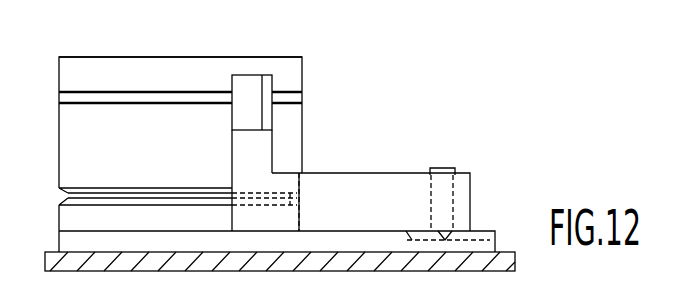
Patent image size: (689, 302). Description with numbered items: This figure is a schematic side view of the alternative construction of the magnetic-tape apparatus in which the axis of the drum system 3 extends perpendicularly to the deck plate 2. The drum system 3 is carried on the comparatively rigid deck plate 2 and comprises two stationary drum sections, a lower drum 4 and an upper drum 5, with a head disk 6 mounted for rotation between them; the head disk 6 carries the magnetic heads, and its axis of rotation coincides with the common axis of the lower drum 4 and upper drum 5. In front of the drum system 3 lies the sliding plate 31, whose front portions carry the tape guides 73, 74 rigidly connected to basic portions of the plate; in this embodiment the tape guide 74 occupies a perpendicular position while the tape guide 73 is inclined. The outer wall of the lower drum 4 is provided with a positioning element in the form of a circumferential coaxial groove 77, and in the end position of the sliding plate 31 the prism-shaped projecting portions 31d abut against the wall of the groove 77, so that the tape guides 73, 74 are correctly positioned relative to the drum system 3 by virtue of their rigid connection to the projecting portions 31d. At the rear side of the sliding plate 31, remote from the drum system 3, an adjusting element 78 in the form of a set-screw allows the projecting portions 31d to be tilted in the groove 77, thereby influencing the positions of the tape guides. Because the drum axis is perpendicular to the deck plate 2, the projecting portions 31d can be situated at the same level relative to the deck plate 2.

The deck plate 2 is at (62, 258).
The drum system 3 is at (72, 56).
The lower drum 4 is at (290, 151).
The upper drum 5 is at (165, 70).
The head disk 6 is at (103, 98).
The sliding plate 31 is at (378, 185).
The projecting portions 31d is at (290, 198).
The tape guide 73 is at (270, 85).
The tape guide 74 is at (243, 88).
The groove 77 is at (66, 200).
The adjusting element 78 is at (447, 168).